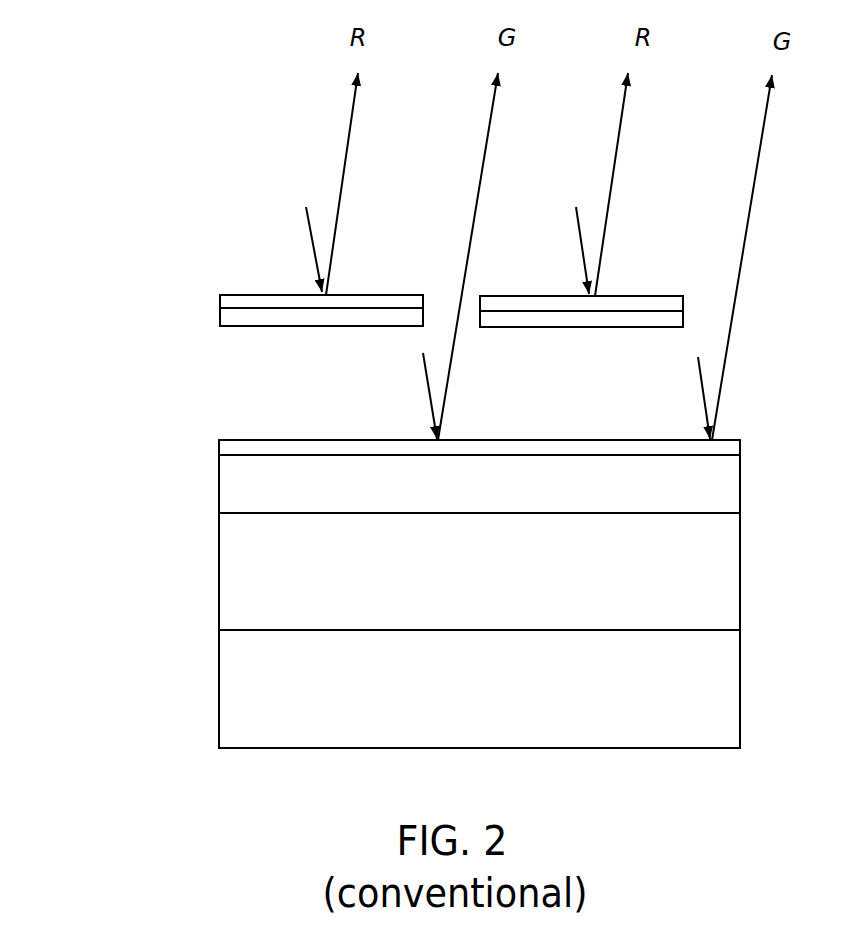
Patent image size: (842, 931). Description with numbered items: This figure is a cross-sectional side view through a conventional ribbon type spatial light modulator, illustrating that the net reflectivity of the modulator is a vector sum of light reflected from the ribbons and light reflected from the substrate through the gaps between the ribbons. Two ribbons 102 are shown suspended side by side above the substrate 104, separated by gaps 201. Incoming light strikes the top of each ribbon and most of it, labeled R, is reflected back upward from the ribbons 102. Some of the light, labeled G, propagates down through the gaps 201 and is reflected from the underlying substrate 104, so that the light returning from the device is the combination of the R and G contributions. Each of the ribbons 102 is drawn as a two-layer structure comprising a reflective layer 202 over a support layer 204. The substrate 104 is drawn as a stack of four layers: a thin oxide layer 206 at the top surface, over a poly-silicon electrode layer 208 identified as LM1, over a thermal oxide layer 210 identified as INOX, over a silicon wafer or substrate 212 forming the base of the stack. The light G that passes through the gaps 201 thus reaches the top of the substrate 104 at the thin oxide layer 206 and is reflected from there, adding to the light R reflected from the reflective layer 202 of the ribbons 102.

The ribbons 102 is at (358, 303).
The substrate 104 is at (383, 563).
The gaps 201 is at (447, 313).
The reflective layer 202 is at (667, 307).
The support layer 204 is at (602, 322).
The thin oxide layer 206 is at (573, 450).
The poly-silicon electrode layer 208 is at (479, 493).
The thermal oxide layer 210 is at (479, 595).
The silicon wafer or substrate 212 is at (538, 705).